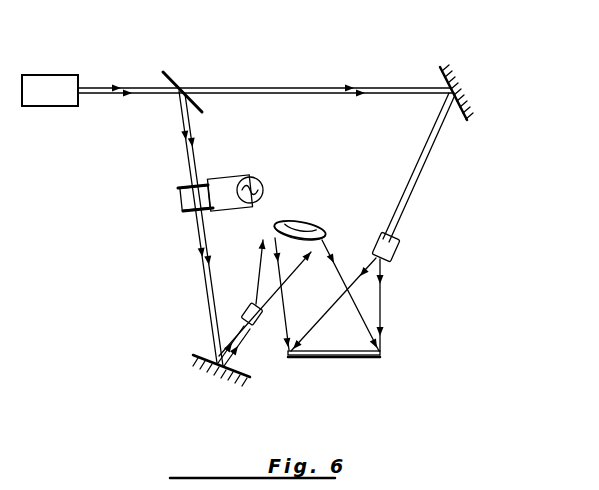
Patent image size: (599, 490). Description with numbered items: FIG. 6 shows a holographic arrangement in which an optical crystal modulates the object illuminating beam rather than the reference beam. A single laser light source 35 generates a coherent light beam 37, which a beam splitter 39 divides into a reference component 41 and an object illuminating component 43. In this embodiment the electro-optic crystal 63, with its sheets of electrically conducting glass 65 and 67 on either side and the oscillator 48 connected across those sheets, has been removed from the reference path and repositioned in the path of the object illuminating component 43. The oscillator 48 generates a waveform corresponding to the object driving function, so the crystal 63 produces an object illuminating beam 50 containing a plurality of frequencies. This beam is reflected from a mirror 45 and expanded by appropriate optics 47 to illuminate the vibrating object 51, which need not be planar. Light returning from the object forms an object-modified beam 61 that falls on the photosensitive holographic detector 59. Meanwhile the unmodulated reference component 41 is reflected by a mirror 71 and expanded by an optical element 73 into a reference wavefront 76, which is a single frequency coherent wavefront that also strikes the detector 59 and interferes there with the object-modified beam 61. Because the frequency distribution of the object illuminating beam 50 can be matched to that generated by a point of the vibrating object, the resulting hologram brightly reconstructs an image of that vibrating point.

The laser light source 35 is at (45, 80).
The coherent light beam 37 is at (101, 88).
The beam splitter 39 is at (168, 72).
The reference component 41 is at (213, 89).
The object illuminating component 43 is at (184, 116).
The mirror 45 is at (252, 372).
The optics 47 is at (247, 306).
The oscillator 48 is at (260, 183).
The object illuminating beam 50 is at (259, 274).
The vibrating object 51 is at (304, 223).
The photosensitive holographic detector 59 is at (358, 358).
The object-modified beam 61 is at (288, 318).
The electro-optic crystal 63 is at (181, 199).
The sheet of electrically conducting glass 65 is at (186, 212).
The sheet of electrically conducting glass 67 is at (182, 187).
The mirror 71 is at (470, 102).
The optical element 73 is at (395, 250).
The reference wavefront 76 is at (388, 306).